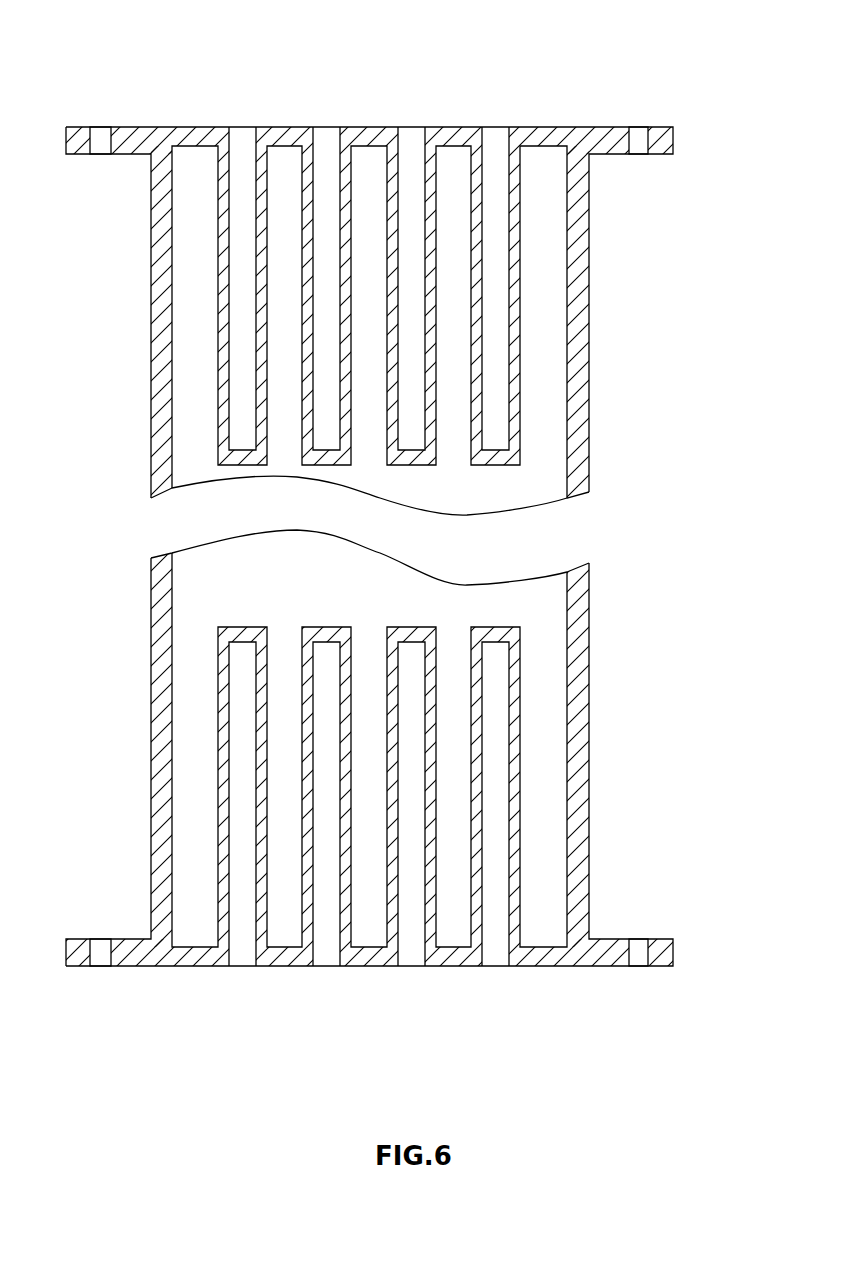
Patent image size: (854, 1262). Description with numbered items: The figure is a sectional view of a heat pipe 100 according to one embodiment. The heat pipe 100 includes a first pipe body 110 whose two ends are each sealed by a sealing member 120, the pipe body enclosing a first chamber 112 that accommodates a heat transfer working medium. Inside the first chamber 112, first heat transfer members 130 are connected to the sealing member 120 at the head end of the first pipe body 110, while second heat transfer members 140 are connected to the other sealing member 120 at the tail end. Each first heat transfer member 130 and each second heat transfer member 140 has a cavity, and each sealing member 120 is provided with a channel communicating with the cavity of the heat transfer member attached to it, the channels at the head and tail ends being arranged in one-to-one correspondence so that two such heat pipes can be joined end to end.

The heat pipe 100 is at (398, 557).
The first pipe body 110 is at (590, 580).
The first chamber 112 is at (543, 393).
The sealing member 120 is at (398, 557).
The first heat transfer member 130 is at (521, 274).
The second heat transfer member 140 is at (521, 675).